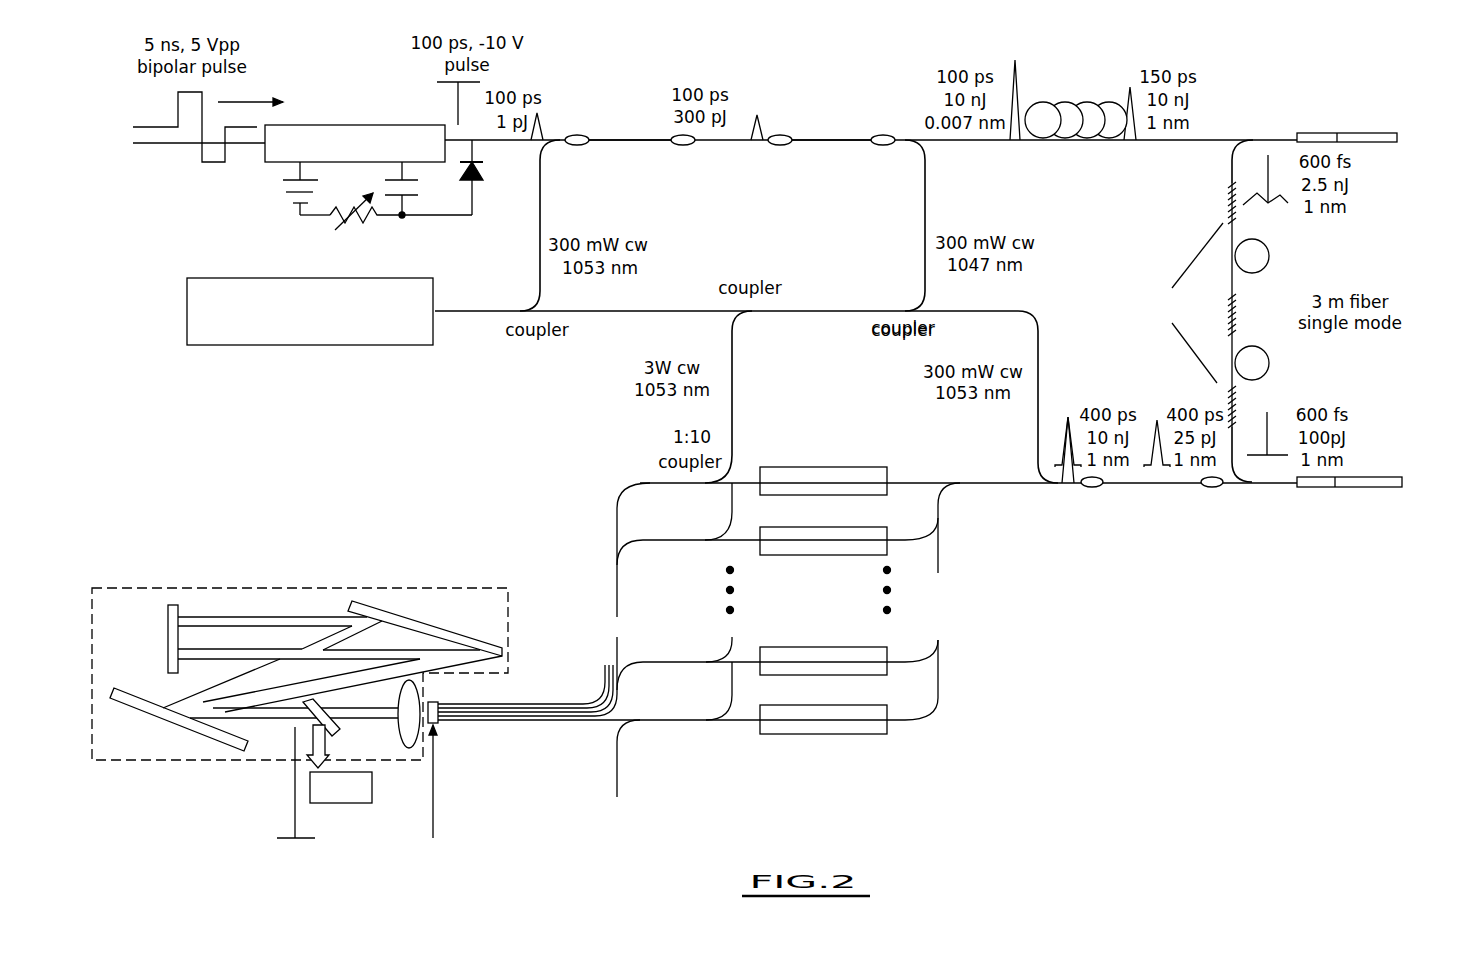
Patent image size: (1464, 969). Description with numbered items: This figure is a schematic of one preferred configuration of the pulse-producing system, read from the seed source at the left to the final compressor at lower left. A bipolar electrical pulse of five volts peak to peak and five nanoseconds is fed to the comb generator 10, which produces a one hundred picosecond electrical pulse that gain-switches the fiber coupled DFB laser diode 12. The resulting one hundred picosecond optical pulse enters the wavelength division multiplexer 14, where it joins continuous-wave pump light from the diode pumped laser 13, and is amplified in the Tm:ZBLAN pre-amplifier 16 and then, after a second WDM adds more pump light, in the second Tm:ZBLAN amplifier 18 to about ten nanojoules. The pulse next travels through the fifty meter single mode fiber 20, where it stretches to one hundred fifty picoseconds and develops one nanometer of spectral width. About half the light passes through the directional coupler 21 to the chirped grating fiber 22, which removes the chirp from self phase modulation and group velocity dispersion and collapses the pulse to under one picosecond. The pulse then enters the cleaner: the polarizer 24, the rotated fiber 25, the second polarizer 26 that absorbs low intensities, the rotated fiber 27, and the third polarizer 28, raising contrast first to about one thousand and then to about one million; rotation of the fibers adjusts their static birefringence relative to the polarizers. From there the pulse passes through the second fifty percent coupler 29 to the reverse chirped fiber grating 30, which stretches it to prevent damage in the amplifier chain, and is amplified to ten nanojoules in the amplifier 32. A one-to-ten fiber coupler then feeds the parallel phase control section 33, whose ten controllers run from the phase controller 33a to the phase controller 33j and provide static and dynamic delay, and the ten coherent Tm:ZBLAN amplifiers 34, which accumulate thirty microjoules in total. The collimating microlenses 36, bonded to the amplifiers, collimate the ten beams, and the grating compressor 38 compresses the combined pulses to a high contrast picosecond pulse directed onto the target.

The comb generator 10 is at (368, 164).
The DFB laser diode 12 is at (474, 206).
The diode pumped laser 13 is at (333, 345).
The wavelength division multiplexer 14 is at (566, 146).
The pre-amplifier 16 is at (665, 167).
The second Tm:ZBLAN amplifier 18 is at (838, 165).
The single mode fiber 20 is at (1073, 130).
The directional coupler 21 is at (1243, 108).
The chirped grating fiber 22 is at (1350, 123).
The polarizer 24 is at (1188, 250).
The fiber 25 is at (1265, 260).
The second polarizer 26 is at (1244, 315).
The fiber 27 is at (1262, 361).
The third polarizer 28 is at (1215, 375).
The second 50 percent coupler 29 is at (1207, 490).
The reverse chirped fiber grating 30 is at (1376, 499).
The amplifier 32 is at (1149, 532).
The phase control section 33 is at (727, 596).
The phase controller 33a is at (887, 470).
The phase controller 33j is at (887, 734).
The amplifiers 34 is at (527, 729).
The collimating microlenses 36 is at (432, 783).
The grating compressor 38 is at (300, 695).